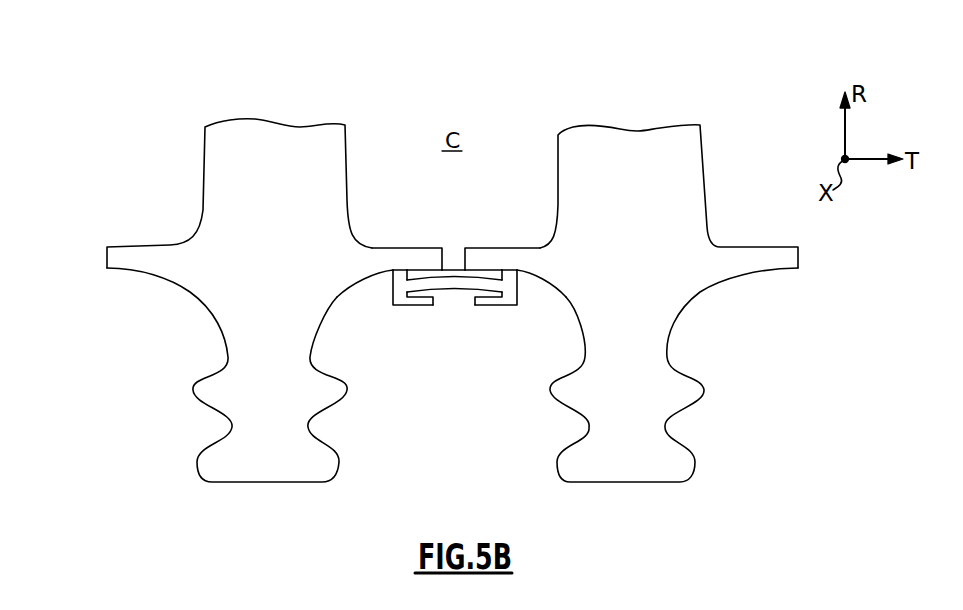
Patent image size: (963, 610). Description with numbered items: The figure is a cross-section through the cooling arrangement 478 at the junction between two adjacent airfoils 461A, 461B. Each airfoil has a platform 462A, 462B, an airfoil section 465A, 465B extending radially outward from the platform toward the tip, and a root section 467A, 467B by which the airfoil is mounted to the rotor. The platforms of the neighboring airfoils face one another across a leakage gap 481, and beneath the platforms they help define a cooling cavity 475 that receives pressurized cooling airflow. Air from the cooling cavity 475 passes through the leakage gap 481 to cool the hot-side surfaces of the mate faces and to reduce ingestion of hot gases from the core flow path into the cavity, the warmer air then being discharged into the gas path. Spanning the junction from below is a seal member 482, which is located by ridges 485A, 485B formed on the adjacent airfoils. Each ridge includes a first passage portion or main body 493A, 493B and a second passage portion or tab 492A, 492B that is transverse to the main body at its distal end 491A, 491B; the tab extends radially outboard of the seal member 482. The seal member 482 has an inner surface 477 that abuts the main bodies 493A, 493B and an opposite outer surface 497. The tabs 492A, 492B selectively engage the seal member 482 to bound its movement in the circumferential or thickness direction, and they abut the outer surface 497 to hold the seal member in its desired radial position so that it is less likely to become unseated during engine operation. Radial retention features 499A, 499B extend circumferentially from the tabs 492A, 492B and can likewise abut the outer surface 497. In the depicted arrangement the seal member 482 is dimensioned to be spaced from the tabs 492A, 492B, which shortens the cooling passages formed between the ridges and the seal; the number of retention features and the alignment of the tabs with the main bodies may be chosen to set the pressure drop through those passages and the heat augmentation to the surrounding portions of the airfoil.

The airfoil 461A is at (262, 279).
The airfoil 461B is at (640, 269).
The platform 462A is at (373, 250).
The platform 462B is at (478, 270).
The airfoil section 465A is at (222, 171).
The airfoil section 465B is at (688, 178).
The root section 467A is at (227, 375).
The root section 467B is at (661, 319).
The cooling cavity 475 is at (478, 295).
The inner surface 477 is at (488, 270).
The cooling arrangement 478 is at (408, 368).
The leakage gap 481 is at (453, 250).
The seal member 482 is at (460, 292).
The ridge 485A is at (413, 270).
The ridge 485B is at (497, 270).
The distal end 491A is at (390, 283).
The distal end 491B is at (516, 285).
The tab 492A is at (389, 300).
The tab 492B is at (521, 300).
The main body 493A is at (420, 270).
The main body 493B is at (504, 270).
The outer surface 497 is at (472, 297).
The radial retention feature 499A is at (411, 306).
The radial retention feature 499B is at (484, 306).